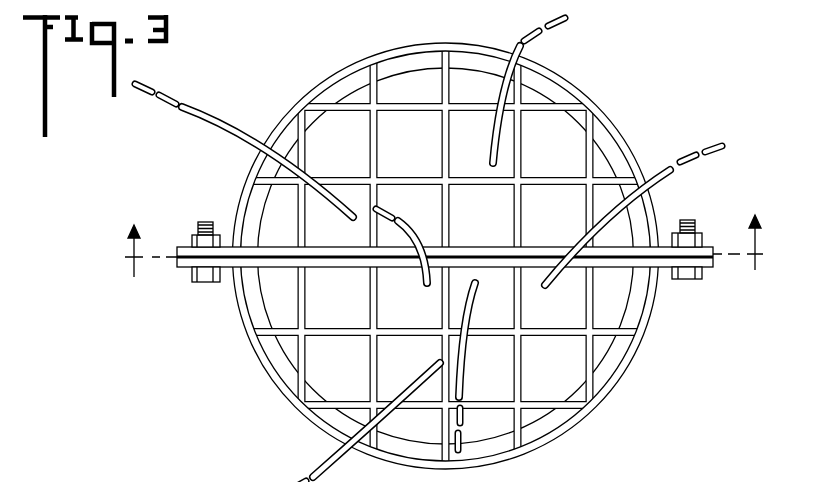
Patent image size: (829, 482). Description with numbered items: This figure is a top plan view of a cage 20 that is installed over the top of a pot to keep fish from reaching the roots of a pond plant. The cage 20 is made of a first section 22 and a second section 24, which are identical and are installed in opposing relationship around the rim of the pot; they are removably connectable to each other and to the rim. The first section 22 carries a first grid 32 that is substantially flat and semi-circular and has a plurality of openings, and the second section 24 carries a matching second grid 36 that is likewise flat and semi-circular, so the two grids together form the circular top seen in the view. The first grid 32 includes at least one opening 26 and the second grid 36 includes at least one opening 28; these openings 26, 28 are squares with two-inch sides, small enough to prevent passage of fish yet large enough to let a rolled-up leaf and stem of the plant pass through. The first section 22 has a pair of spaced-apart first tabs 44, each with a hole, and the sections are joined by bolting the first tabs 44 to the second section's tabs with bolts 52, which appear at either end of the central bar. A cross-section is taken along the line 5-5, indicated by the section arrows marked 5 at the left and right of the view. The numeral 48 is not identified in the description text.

The cage 20 is at (683, 115).
The first section 22 is at (600, 102).
The second section 24 is at (262, 372).
The opening 26 is at (400, 150).
The opening 28 is at (335, 297).
The first grid 32 is at (440, 105).
The second grid 36 is at (520, 403).
The first tabs 44 is at (182, 247).
The nut 48 is at (182, 267).
The bolts 52 is at (202, 222).
The line 5- 5 is at (444, 264).